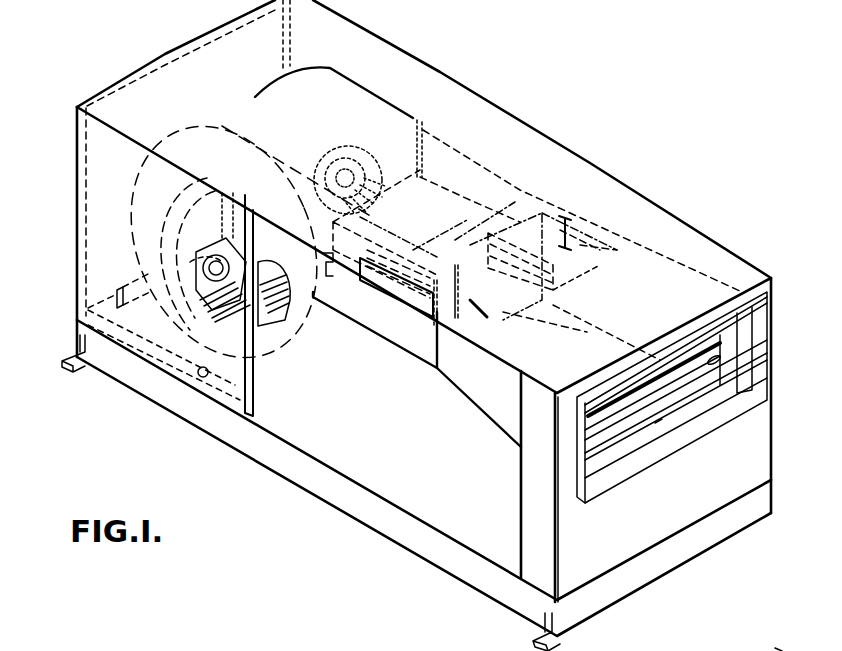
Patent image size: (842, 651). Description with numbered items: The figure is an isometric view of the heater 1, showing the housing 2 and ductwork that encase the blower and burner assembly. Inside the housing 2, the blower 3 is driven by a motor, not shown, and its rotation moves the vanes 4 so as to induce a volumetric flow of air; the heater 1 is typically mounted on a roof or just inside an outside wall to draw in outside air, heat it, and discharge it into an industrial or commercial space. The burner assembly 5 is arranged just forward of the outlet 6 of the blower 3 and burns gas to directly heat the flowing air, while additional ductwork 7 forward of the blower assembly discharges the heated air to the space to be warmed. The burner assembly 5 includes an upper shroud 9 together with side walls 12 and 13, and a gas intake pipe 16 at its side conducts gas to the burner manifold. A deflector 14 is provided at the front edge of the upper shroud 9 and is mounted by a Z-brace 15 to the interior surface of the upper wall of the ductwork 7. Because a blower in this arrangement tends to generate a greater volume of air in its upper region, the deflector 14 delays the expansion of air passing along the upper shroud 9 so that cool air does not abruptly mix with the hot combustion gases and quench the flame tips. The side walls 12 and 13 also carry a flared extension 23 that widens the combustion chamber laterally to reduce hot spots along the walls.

The heater 1 is at (508, 111).
The housing 2 is at (582, 197).
The blower 3 is at (147, 228).
The vanes 4 is at (212, 307).
The burner assembly 5 is at (501, 208).
The outlet 6 is at (395, 140).
The ductwork 7 is at (505, 437).
The upper shroud 9 is at (436, 196).
The side wall 12 is at (334, 223).
The side wall 13 is at (541, 183).
The deflector 14 is at (600, 226).
The Z-brace 15 is at (553, 267).
The gas intake pipe 16 is at (337, 262).
The flared extension 23 is at (415, 308).